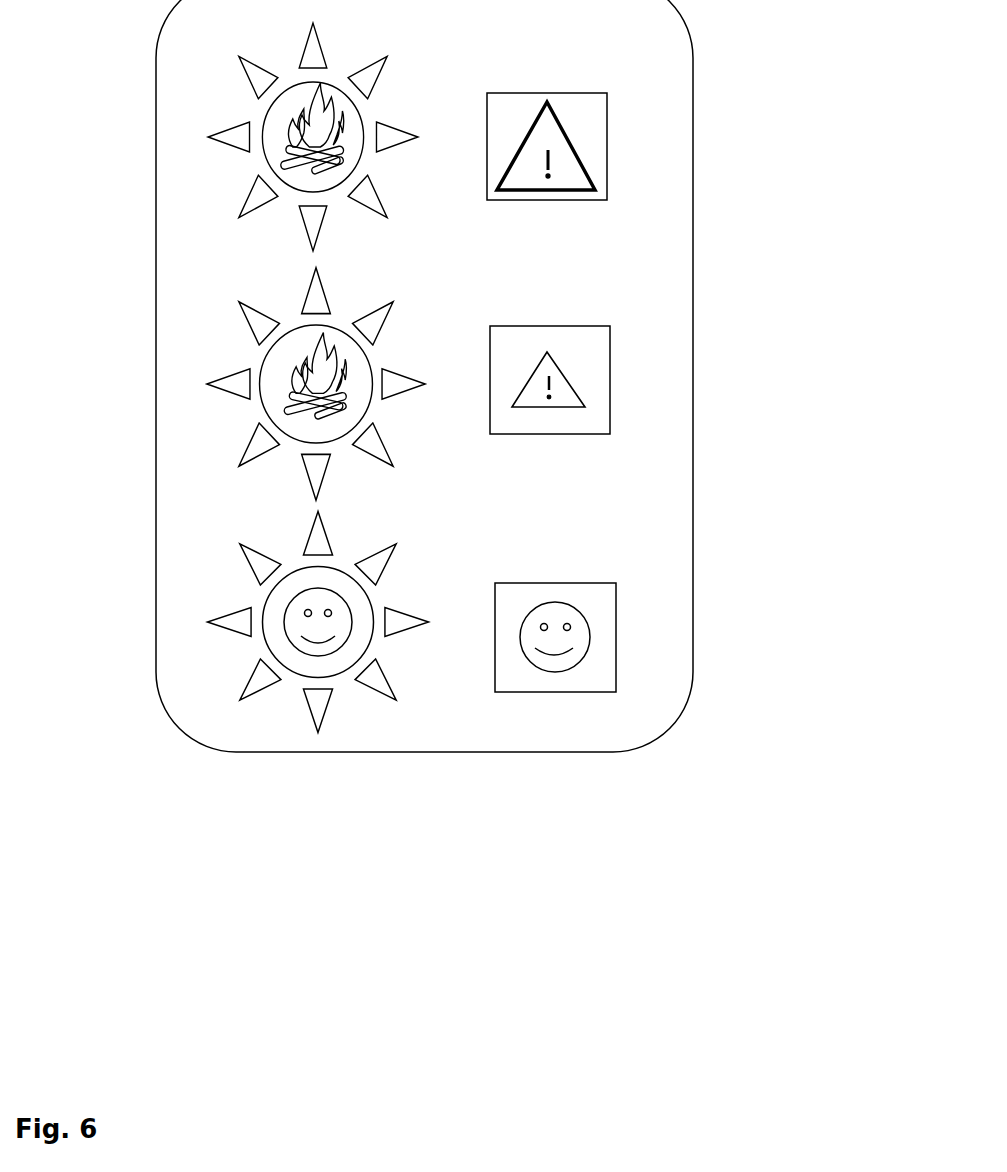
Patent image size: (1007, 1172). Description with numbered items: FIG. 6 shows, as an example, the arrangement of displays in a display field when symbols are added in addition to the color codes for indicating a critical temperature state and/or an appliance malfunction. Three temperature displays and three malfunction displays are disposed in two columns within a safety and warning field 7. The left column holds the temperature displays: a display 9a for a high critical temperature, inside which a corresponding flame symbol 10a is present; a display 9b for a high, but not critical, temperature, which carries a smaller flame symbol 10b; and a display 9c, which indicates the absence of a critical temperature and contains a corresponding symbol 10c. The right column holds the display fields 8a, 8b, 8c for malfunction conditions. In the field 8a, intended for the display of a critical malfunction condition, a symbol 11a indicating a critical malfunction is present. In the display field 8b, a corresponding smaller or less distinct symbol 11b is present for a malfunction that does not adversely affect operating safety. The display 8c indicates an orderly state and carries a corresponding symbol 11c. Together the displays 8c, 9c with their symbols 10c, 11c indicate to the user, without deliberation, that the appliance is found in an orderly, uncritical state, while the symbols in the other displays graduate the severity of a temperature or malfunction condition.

The safety and warning field 7 is at (182, 267).
The display field for critical malfunction condition 8a is at (636, 181).
The display field for non-safety-critical malfunction 8b is at (642, 401).
The display for orderly state 8c is at (586, 709).
The display for high critical temperature 9a is at (233, 140).
The display for high but not critical temperature 9b is at (235, 405).
The display for absence of critical temperature 9c is at (240, 688).
The flame symbol 10a is at (277, 112).
The smaller flame symbol 10b is at (271, 379).
The symbol for orderly temperature state 10c is at (310, 656).
The symbol indicating a critical malfunction 11a is at (598, 128).
The smaller or less distinct symbol 11b is at (596, 386).
The symbol for orderly malfunction state 11c is at (533, 680).